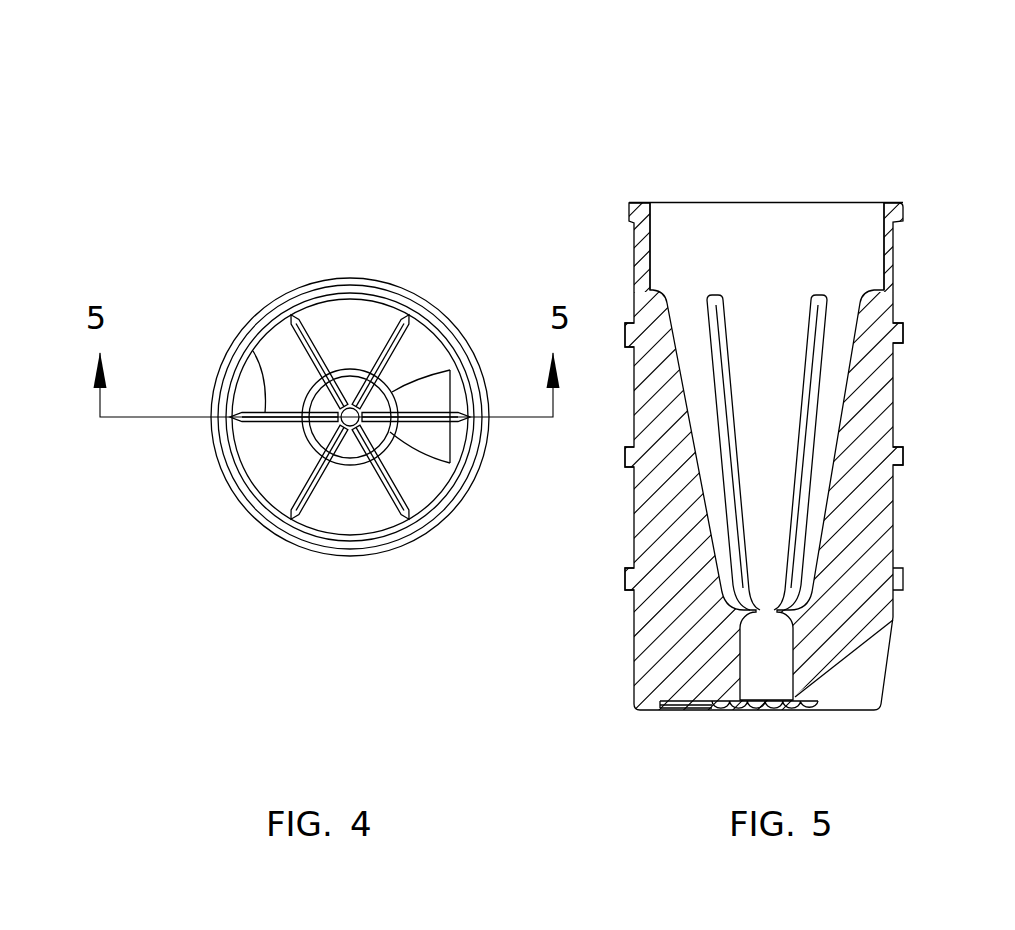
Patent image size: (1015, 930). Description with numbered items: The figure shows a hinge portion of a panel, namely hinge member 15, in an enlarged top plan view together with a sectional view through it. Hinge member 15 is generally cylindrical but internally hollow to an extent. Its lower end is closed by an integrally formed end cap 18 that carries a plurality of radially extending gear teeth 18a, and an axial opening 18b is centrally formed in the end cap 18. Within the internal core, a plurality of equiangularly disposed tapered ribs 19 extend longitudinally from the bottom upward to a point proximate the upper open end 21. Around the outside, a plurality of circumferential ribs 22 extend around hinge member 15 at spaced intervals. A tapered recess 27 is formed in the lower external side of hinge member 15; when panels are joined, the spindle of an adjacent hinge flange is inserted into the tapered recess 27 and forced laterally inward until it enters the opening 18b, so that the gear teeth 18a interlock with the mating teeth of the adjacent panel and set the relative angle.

In FIG. 4, the hinge member 15 is at (236, 510).
In FIG. 5, the hinge member 15 is at (620, 200).
In FIG. 4, the tapered ribs 19 is at (303, 353).
In FIG. 5, the tapered ribs 19 is at (728, 355).
In FIG. 4, the opening 18b is at (352, 427).
In FIG. 5, the upper open end 21 is at (838, 220).
In FIG. 5, the circumferential ribs 22 is at (625, 333).
In FIG. 5, the end cap 18 is at (722, 712).
In FIG. 5, the gear teeth 18a is at (768, 712).
In FIG. 5, the tapered recess 27 is at (858, 686).